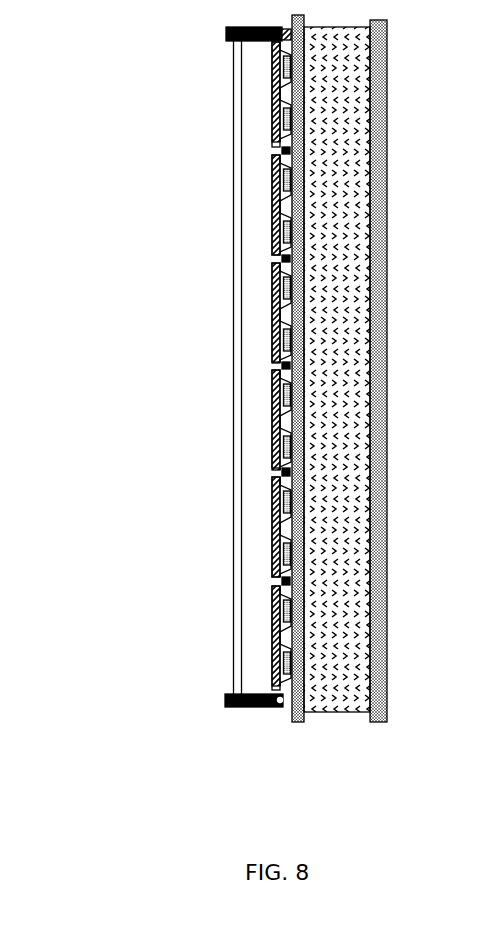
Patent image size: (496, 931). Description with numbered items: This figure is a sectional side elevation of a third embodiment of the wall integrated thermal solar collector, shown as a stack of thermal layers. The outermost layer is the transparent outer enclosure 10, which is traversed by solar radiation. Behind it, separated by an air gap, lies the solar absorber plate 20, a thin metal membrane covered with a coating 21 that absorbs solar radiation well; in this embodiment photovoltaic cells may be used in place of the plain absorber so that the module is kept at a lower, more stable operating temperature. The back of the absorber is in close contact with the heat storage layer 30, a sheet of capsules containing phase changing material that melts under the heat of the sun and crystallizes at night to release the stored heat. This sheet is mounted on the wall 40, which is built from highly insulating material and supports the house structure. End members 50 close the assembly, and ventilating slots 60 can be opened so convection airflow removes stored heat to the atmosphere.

The transparent outer enclosure 10 is at (234, 152).
The solar absorber plate 20 is at (274, 330).
The coating 21 is at (270, 402).
The heat storage layer 30 is at (310, 117).
The wall 40 is at (356, 240).
The end cap 50 is at (225, 703).
The ventilating slots 60 is at (280, 705).